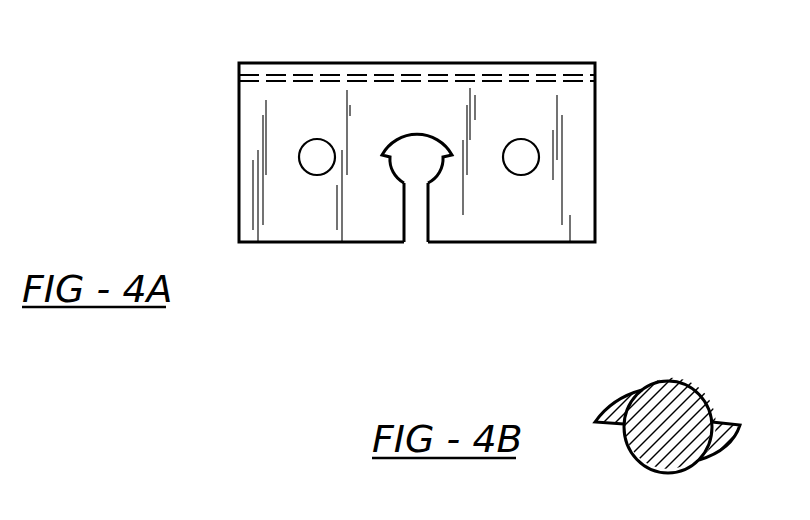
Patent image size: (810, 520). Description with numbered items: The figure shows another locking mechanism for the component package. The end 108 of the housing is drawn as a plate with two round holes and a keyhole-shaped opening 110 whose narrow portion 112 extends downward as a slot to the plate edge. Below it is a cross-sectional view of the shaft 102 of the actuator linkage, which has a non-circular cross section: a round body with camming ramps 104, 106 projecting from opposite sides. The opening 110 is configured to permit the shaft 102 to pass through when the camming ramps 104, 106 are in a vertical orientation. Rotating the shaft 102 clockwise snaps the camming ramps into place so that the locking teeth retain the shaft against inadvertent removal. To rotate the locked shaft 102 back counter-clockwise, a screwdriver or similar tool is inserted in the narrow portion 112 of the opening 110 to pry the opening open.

In FIG. 4B, the shaft 102 is at (698, 388).
In FIG. 4B, the camming ramp 104 is at (727, 437).
In FIG. 4B, the camming ramp 106 is at (625, 408).
In FIG. 4A, the end of the housing 108 is at (595, 132).
In FIG. 4A, the opening 110 is at (407, 152).
In FIG. 4A, the narrow portion of the opening 112 is at (416, 243).